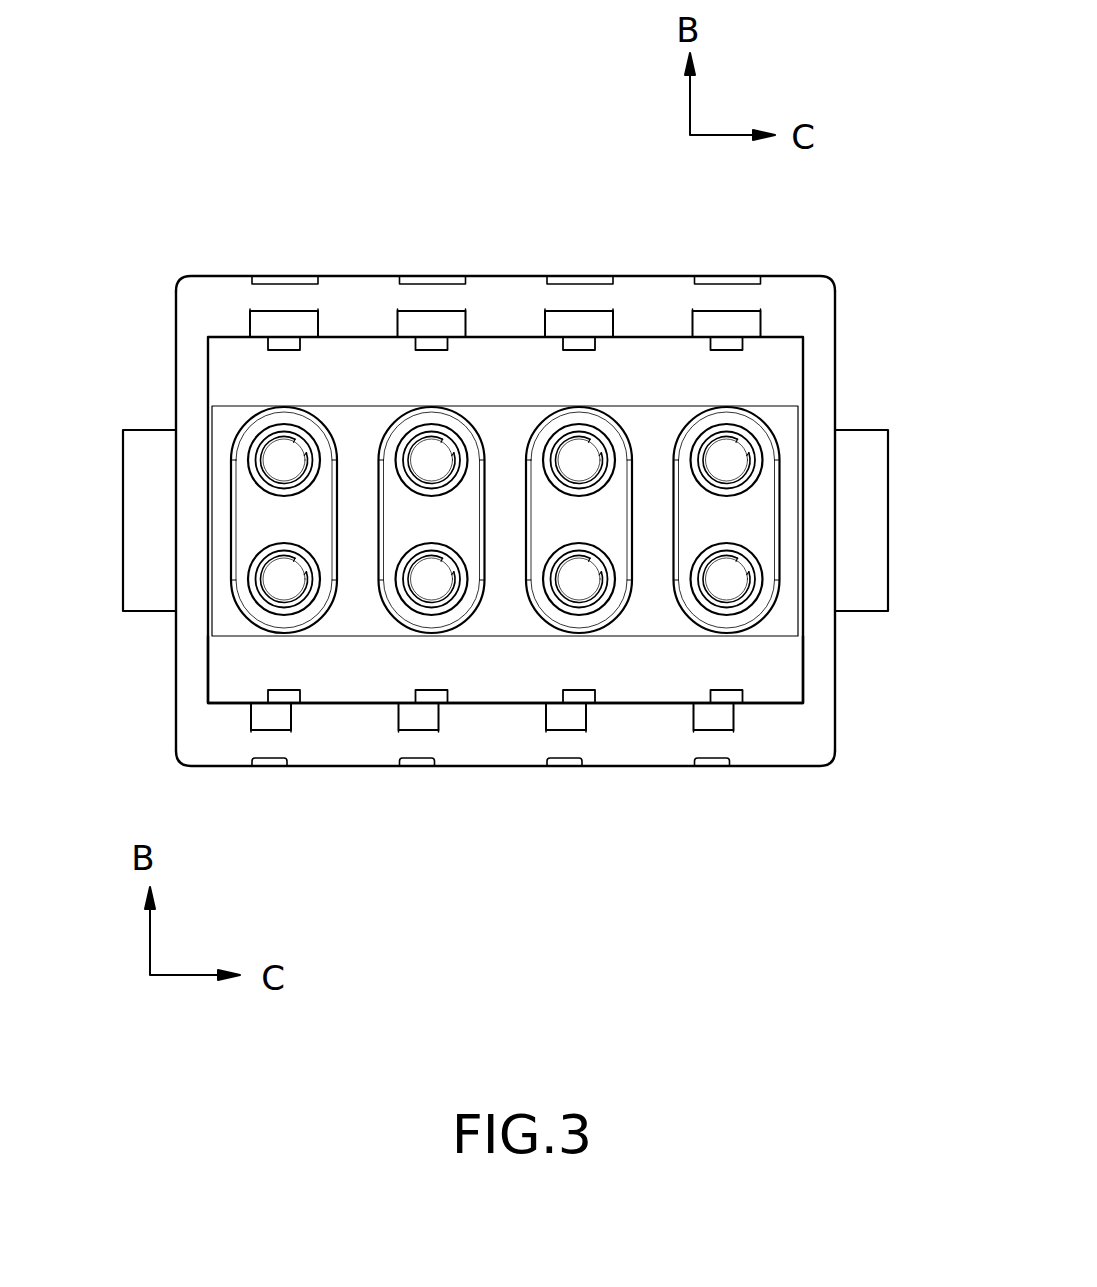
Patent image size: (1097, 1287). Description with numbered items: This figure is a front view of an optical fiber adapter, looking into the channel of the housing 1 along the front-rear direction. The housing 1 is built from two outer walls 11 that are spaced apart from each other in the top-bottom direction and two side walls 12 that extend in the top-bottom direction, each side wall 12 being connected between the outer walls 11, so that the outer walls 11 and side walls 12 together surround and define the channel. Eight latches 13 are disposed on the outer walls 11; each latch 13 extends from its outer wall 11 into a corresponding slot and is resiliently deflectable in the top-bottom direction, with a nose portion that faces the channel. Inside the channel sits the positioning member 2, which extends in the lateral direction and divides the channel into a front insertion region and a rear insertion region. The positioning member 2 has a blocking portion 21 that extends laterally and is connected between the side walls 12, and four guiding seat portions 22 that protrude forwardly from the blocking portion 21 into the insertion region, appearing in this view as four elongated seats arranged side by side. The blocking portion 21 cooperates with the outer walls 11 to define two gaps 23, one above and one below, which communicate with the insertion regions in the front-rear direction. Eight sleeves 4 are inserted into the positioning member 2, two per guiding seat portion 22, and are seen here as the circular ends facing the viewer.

The housing 1 is at (497, 511).
The positioning member 2 is at (478, 581).
The sleeve 4 is at (290, 447).
The outer wall 11 is at (506, 290).
The side wall 12 is at (183, 353).
The latch 13 is at (285, 348).
The blocking portion 21 is at (642, 627).
The guiding seat portion 22 is at (236, 506).
The gap 23 is at (760, 663).